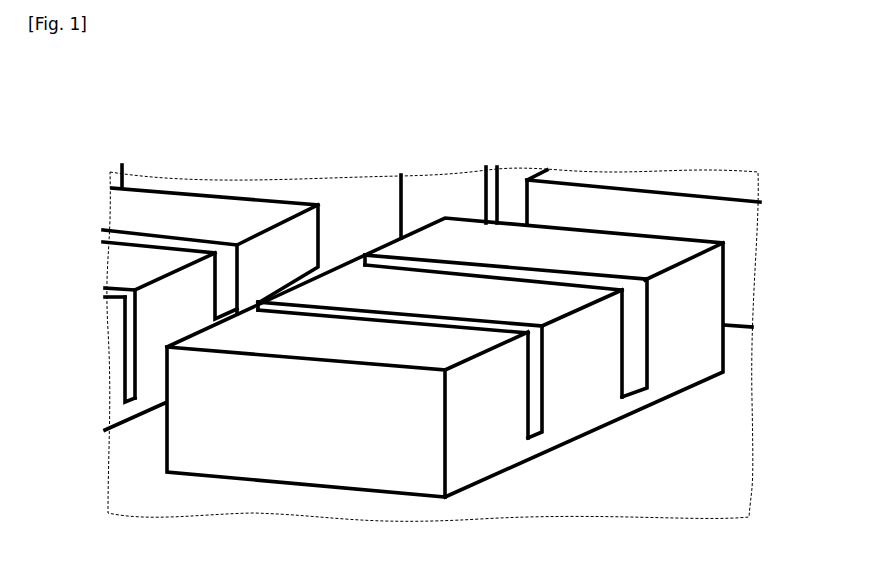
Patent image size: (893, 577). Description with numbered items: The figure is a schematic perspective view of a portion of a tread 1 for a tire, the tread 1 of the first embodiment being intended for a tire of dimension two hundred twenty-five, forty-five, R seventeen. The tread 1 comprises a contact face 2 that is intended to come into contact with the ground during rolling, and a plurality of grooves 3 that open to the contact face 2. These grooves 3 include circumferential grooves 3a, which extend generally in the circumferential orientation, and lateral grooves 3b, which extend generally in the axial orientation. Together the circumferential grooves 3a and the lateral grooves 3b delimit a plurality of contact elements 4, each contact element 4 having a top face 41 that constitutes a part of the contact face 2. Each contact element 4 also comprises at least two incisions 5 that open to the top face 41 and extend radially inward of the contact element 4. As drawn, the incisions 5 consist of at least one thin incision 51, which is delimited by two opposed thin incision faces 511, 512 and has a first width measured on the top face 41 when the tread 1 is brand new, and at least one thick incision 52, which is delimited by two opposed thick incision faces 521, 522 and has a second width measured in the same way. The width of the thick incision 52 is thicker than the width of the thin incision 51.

The tread 1 is at (593, 133).
The contact face 2 is at (647, 253).
The grooves 3 is at (441, 368).
The circumferential grooves 3a is at (140, 433).
The lateral grooves 3b is at (733, 342).
The contact elements 4 is at (723, 243).
The top face 41 is at (300, 335).
The incisions 5 is at (483, 339).
The thin incision 51 is at (433, 364).
The thick incision 52 is at (536, 318).
The thin incision face 511 is at (530, 390).
The thin incision face 512 is at (543, 402).
The thick incision face 521 is at (622, 340).
The thick incision face 522 is at (648, 370).